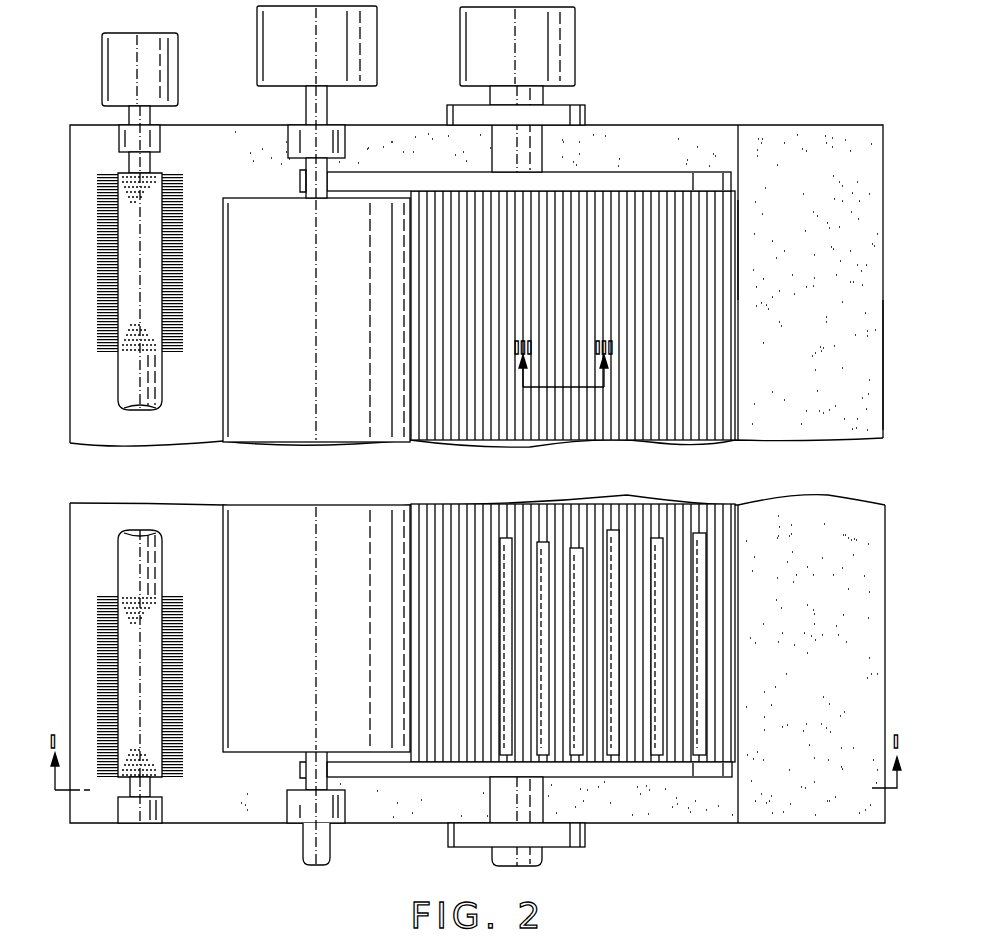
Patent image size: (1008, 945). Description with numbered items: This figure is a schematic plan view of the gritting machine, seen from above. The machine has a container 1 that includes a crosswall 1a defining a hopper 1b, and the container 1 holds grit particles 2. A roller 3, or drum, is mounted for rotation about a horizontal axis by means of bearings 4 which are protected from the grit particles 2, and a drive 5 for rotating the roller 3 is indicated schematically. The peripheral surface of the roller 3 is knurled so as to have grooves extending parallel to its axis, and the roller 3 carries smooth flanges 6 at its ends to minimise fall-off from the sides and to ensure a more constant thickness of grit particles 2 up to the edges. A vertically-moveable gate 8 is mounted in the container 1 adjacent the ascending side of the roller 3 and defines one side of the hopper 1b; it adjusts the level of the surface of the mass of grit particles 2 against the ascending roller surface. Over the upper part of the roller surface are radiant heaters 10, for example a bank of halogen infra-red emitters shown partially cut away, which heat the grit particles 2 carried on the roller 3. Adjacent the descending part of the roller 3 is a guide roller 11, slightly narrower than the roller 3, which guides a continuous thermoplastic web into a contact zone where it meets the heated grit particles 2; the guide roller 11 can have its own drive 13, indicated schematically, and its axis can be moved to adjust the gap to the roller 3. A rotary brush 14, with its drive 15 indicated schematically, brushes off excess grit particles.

The container 1 is at (70, 348).
The crosswall 1a is at (738, 256).
The hopper 1b is at (808, 398).
The grit particles 2 is at (850, 318).
The roller 3 is at (687, 389).
The bearings 4 is at (572, 116).
The drive 5 is at (560, 52).
The flanges 6 is at (667, 177).
The gate 8 is at (738, 565).
The radiant heaters 10 is at (702, 540).
The guide roller 11 is at (258, 217).
The drive 13 is at (350, 58).
The rotary brush 14 is at (130, 354).
The drive 15 is at (163, 76).